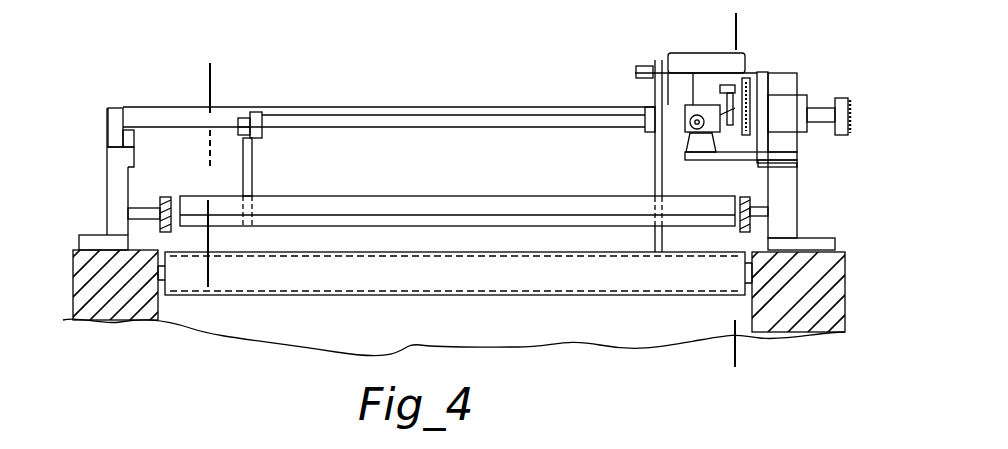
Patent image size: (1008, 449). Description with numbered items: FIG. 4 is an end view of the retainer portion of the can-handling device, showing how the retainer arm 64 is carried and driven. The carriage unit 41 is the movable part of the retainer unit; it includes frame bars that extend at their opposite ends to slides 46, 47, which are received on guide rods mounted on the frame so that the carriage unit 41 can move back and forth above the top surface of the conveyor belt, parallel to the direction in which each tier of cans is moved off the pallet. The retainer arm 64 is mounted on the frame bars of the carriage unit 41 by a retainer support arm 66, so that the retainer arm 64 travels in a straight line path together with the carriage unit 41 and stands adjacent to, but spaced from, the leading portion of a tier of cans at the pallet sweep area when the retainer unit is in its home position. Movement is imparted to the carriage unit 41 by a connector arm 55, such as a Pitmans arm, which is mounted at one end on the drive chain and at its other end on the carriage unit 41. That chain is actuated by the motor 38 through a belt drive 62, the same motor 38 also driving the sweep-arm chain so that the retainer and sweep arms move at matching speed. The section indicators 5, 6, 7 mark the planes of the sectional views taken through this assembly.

The motor 38 is at (780, 102).
The carriage unit 41 is at (500, 74).
The slide 46 is at (108, 146).
The slide 47 is at (665, 72).
The connector arm 55 is at (735, 108).
The belt drive 62 is at (848, 93).
The retainer arm 64 is at (447, 203).
The retainer support arm 66 is at (255, 164).
The section line 5- 5 is at (190, 77).
The section line 6- 6 is at (736, 25).
The section line 7- 7 is at (736, 25).